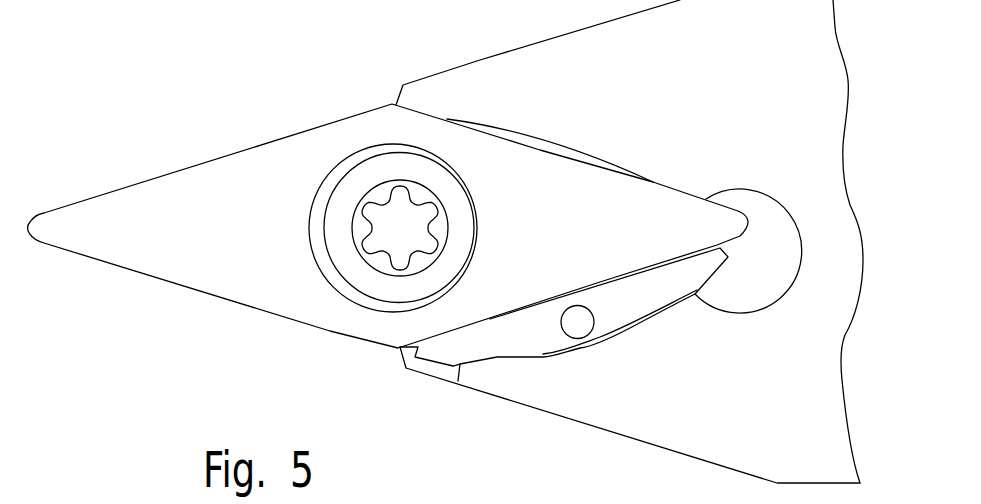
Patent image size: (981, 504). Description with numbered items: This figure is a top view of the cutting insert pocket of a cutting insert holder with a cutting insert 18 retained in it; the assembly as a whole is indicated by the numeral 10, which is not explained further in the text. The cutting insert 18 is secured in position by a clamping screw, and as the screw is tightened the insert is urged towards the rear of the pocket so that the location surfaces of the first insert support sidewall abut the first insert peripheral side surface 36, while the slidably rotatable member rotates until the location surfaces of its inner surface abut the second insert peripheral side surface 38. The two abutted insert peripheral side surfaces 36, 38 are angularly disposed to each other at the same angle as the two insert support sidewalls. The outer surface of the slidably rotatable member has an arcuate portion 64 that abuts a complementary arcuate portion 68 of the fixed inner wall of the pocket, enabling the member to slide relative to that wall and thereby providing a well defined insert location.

The cutting tool assembly 10 is at (168, 82).
The cutting insert 18 is at (195, 250).
The first insert peripheral side surface 36 is at (542, 147).
The second insert peripheral side surface 38 is at (603, 287).
The arcuate portion of the outer surface of the slidably rotatable member 64 is at (597, 347).
The arcuate portion of the fixed inner wall 68 is at (550, 357).